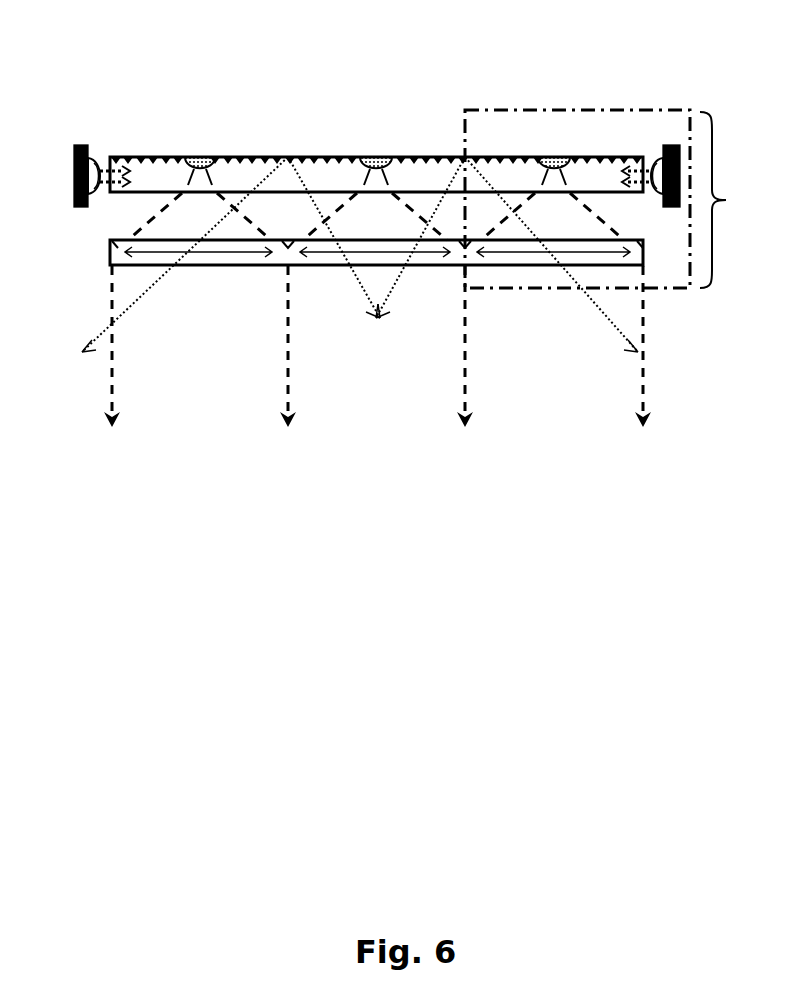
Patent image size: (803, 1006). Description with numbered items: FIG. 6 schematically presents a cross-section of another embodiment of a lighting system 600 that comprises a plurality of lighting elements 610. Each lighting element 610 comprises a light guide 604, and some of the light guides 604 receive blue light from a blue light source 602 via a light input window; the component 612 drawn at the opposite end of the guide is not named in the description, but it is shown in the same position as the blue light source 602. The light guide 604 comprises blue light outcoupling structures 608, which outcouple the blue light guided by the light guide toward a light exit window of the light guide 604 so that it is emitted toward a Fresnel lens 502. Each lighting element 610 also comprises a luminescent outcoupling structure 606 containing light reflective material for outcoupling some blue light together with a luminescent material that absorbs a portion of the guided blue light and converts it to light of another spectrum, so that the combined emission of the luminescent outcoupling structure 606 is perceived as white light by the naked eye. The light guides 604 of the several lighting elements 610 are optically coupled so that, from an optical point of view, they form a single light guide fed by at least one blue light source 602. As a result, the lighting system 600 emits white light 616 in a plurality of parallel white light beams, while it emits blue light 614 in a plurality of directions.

The Fresnel lens 502 is at (170, 250).
The lighting system 600 is at (606, 154).
The blue light source 602 is at (95, 157).
The light guide 604 is at (153, 185).
The luminescent outcoupling structure 606 is at (202, 157).
The blue light outcoupling structures 608 is at (260, 157).
The lighting element 610 is at (500, 110).
The second side light emitter 612 is at (638, 157).
The blue light 614 is at (150, 288).
The white light 616 is at (290, 382).